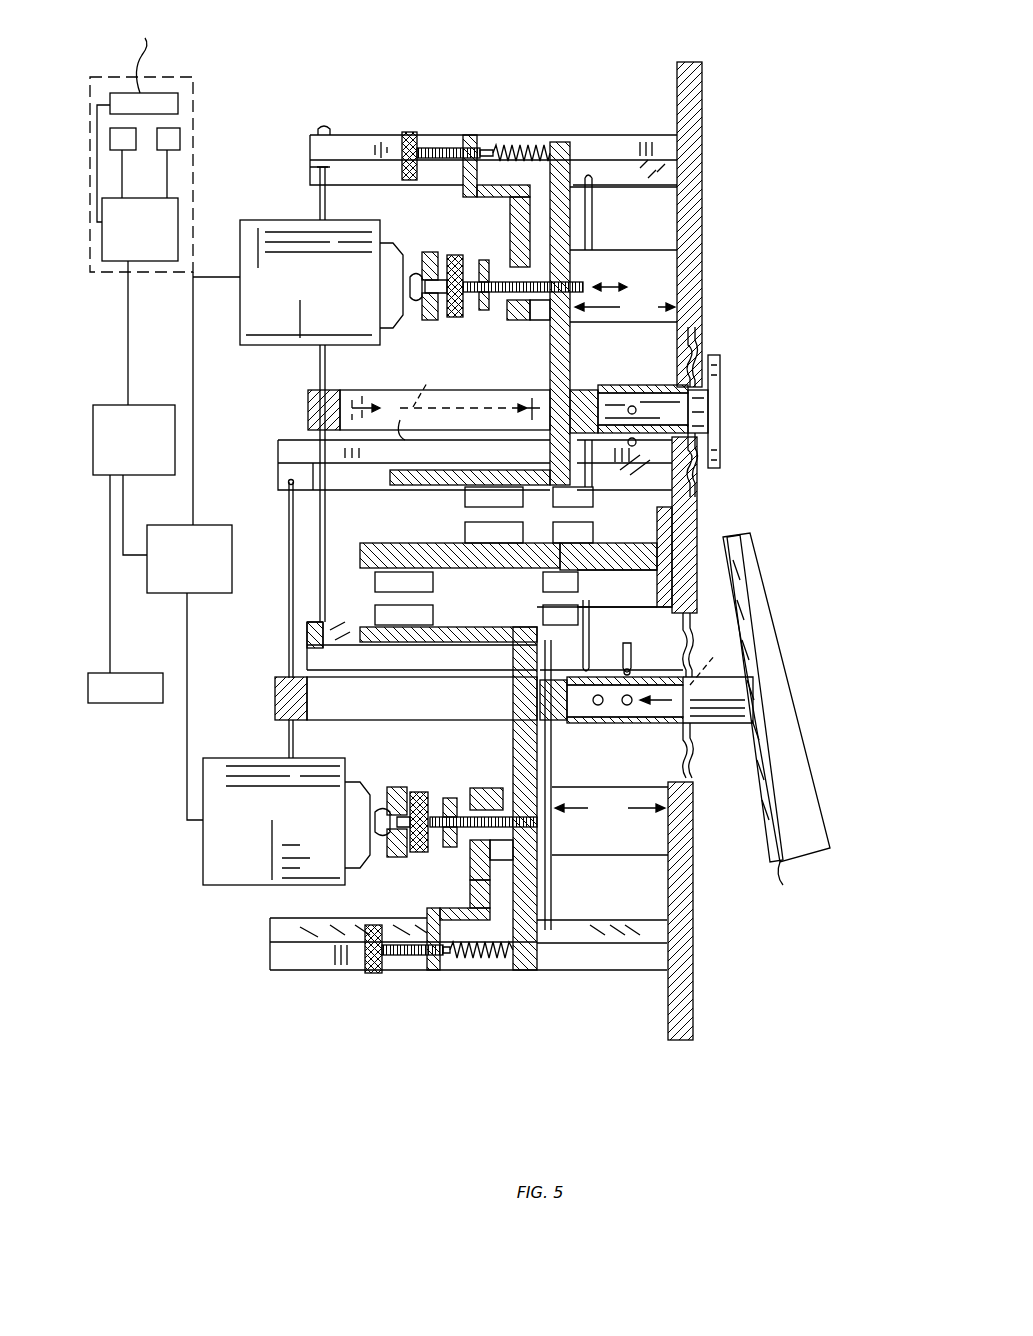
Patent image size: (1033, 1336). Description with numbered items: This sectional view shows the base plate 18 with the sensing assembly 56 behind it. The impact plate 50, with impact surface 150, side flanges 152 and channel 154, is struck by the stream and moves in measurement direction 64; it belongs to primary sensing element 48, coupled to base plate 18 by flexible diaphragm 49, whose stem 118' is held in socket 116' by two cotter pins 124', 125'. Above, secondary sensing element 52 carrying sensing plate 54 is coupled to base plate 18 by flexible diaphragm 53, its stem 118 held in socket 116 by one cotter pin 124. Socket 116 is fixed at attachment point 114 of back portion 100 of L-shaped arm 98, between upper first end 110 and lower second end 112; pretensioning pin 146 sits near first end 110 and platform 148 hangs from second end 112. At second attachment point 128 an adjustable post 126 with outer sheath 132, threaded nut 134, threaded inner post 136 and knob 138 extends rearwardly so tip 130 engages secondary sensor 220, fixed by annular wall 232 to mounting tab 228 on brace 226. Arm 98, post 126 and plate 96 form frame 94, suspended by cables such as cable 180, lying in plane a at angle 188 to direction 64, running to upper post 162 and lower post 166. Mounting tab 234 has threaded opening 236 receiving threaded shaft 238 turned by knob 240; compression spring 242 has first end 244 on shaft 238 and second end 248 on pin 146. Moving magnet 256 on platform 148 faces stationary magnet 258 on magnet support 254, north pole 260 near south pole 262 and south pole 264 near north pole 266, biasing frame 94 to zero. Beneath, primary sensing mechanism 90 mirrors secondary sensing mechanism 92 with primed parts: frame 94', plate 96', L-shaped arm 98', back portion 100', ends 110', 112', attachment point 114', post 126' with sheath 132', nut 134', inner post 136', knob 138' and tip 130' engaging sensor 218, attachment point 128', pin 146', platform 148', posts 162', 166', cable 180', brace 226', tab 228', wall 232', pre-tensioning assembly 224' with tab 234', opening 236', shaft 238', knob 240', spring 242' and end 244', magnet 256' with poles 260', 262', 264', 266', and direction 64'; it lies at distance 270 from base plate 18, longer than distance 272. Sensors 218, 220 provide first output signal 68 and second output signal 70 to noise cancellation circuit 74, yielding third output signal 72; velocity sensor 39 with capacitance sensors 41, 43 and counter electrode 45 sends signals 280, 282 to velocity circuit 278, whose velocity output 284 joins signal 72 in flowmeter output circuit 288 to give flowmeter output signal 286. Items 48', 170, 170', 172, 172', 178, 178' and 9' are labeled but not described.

The base plate 18 is at (688, 232).
The velocity sensor 39 is at (195, 80).
The first capacitance sensor 41 is at (110, 140).
The second capacitance sensor 43 is at (180, 130).
The counter electrode 45 is at (144, 64).
The primary sensing element 48 is at (733, 698).
The lower inner panel 48' is at (583, 957).
The flexible diaphragm 49 is at (690, 745).
The impact plate 50 is at (783, 880).
The secondary sensing element 52 is at (773, 325).
The flexible diaphragm 53 is at (702, 340).
The sensing plate 54 is at (713, 458).
The sensing assembly 56 is at (165, 1050).
The measurement direction 64 is at (439, 383).
The measurement direction 64' is at (710, 662).
The first output signal 68 is at (187, 655).
The second output signal 70 is at (193, 412).
The third output signal 72 is at (123, 510).
The noise cancellation circuit 74 is at (200, 525).
The primary sensing mechanism 90 is at (263, 738).
The secondary sensing mechanism 92 is at (283, 178).
The frame 94 is at (390, 414).
The frame 94' is at (380, 661).
The plate 96 is at (302, 397).
The plate 96' is at (265, 698).
The L-shaped arm 98 is at (538, 313).
The L-shaped arm 98' is at (501, 798).
The back portion 100 is at (623, 268).
The back portion 100' is at (604, 806).
The upper first end 110 is at (618, 135).
The upper first end 110' is at (602, 964).
The lower second end 112 is at (620, 483).
The lower second end 112' is at (610, 763).
The attachment point 114 is at (597, 397).
The attachment point 114' is at (520, 700).
The socket 116 is at (643, 389).
The socket 116' is at (625, 720).
The stem 118 is at (697, 408).
The stem 118' is at (625, 716).
The cotter pin 124 is at (670, 478).
The cotter pin 124' is at (572, 735).
The cotter pin 125' is at (632, 633).
The adjustable post 126 is at (460, 302).
The adjustable post 126' is at (429, 797).
The second attachment point 128 is at (546, 272).
The second attachment point 128' is at (522, 828).
The tip 130 is at (402, 246).
The tip 130' is at (370, 776).
The outer sheath 132 is at (607, 212).
The outer sheath 132' is at (497, 863).
The threaded nut 134 is at (478, 269).
The threaded nut 134' is at (466, 834).
The threaded inner post 136 is at (515, 332).
The threaded inner post 136' is at (473, 802).
The knob 138 is at (412, 339).
The knob 138' is at (402, 878).
The pretensioning pin 146 is at (568, 121).
The pretensioning pin 146' is at (497, 997).
The platform 148 is at (371, 496).
The platform 148' is at (509, 615).
The impact surface 150 is at (755, 628).
The side flanges 152 is at (747, 598).
The channel 154 is at (772, 688).
The upper post 162 is at (493, 140).
The upper post 162' is at (414, 465).
The lower post 166 is at (422, 646).
The lower post 166' is at (448, 960).
The guide 170 is at (668, 187).
The guide 170' is at (617, 588).
The shaft 172 is at (294, 193).
The shaft 172' is at (267, 579).
The block 178 is at (608, 542).
The block 178' is at (594, 872).
The cable 180 is at (350, 522).
The cable 180' is at (309, 739).
The angle 188 is at (335, 470).
The sensor 218 is at (293, 820).
The secondary sensor 220 is at (325, 297).
The pre-tensioning assembly 224' is at (383, 1097).
The brace 226 is at (665, 280).
The brace 226' is at (628, 876).
The mounting tab 228 is at (430, 257).
The mounting tab 228' is at (405, 811).
The annular wall 232 is at (403, 312).
The annular wall 232' is at (370, 848).
The mounting tab 234 is at (499, 230).
The mounting tab 234' is at (402, 898).
The threaded opening 236 is at (496, 136).
The threaded opening 236' is at (452, 973).
The threaded shaft 238 is at (445, 105).
The threaded shaft 238' is at (412, 972).
The knob 240 is at (418, 133).
The knob 240' is at (356, 974).
The compression spring 242 is at (546, 107).
The compression spring 242' is at (481, 970).
The first end 244 is at (503, 94).
The first end 244' is at (463, 936).
The second end 248 is at (521, 166).
The magnet support 254 is at (640, 555).
The moving magnet 256 is at (470, 464).
The moving magnet 256' is at (448, 646).
The stationary magnet 258 is at (400, 562).
The north pole 260 is at (470, 499).
The north pole 260' is at (379, 612).
The south pole 262 is at (470, 531).
The south pole 262' is at (379, 582).
The south pole 264 is at (573, 497).
The south pole 264' is at (501, 618).
The north pole 266 is at (573, 532).
The north pole 266' is at (506, 582).
The distance 270 is at (610, 808).
The distance 272 is at (625, 307).
The velocity circuit 278 is at (102, 238).
The first capacitance signal 280 is at (97, 170).
The second capacitance signal 282 is at (167, 178).
The velocity output 284 is at (128, 300).
The flowmeter output signal 286 is at (127, 673).
The flowmeter output circuit 288 is at (95, 410).
The reference 9' is at (345, 429).